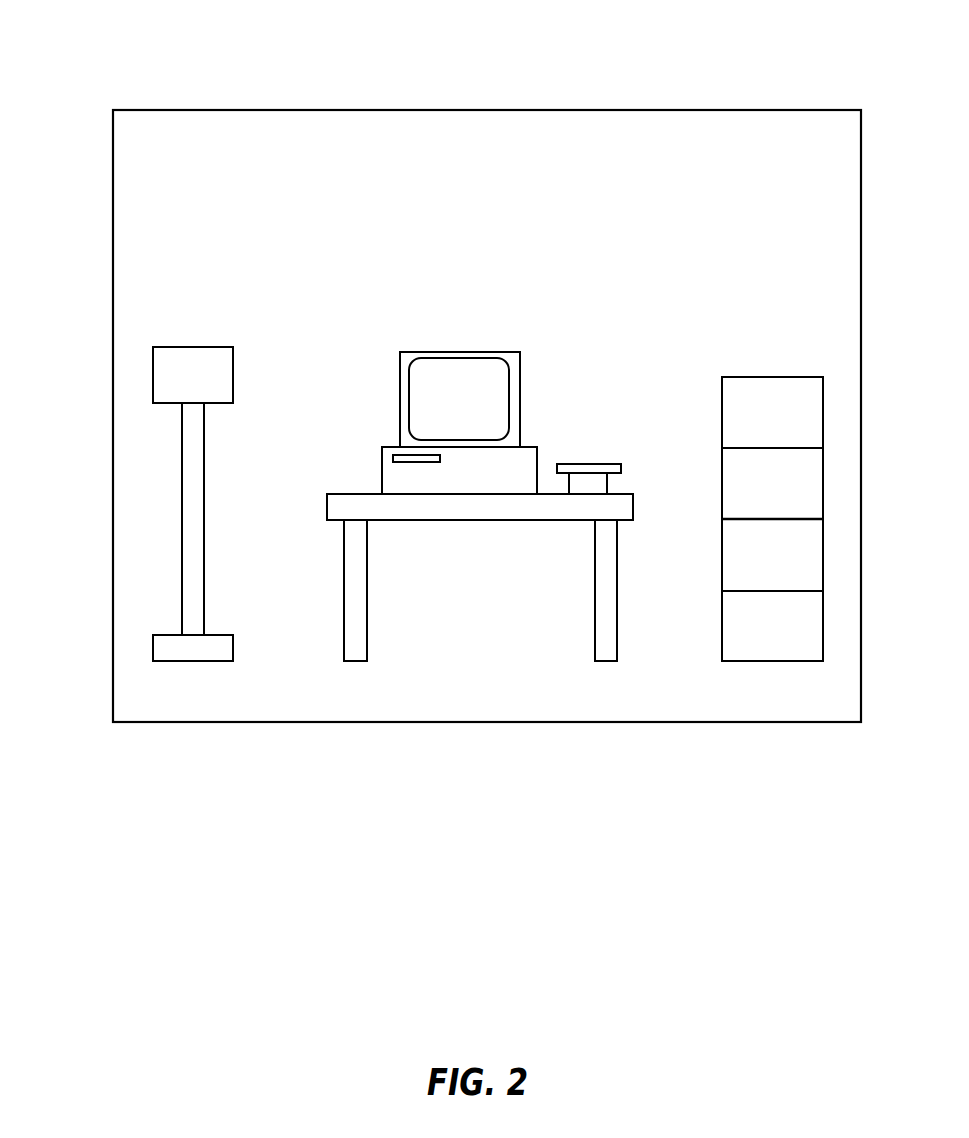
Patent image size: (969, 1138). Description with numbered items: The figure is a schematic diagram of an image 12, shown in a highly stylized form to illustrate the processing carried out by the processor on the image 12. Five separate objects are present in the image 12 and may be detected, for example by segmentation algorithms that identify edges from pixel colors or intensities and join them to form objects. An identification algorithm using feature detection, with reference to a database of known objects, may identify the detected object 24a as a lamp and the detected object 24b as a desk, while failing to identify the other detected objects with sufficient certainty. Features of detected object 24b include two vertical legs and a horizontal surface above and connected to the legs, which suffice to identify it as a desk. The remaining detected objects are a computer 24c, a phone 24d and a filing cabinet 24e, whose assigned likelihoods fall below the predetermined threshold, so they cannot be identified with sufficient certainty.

The image 12 is at (634, 110).
The detected object (lamp) 24a is at (152, 372).
The detected object (desk) 24b is at (344, 561).
The detected object (computer) 24c is at (400, 387).
The detected object (phone) 24d is at (585, 464).
The detected object (filing cabinet) 24e is at (770, 377).